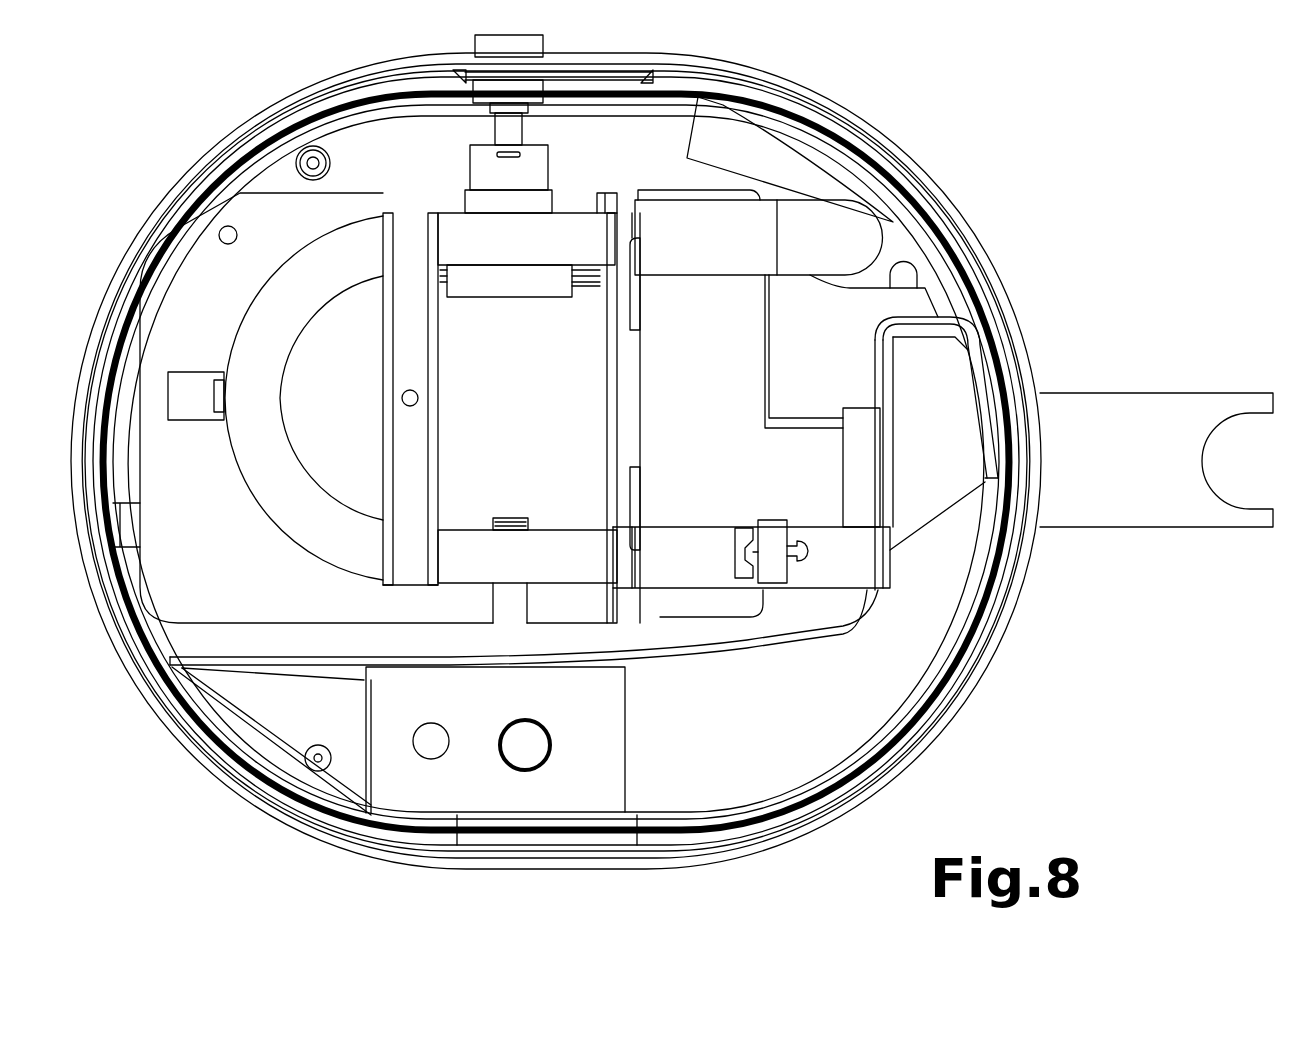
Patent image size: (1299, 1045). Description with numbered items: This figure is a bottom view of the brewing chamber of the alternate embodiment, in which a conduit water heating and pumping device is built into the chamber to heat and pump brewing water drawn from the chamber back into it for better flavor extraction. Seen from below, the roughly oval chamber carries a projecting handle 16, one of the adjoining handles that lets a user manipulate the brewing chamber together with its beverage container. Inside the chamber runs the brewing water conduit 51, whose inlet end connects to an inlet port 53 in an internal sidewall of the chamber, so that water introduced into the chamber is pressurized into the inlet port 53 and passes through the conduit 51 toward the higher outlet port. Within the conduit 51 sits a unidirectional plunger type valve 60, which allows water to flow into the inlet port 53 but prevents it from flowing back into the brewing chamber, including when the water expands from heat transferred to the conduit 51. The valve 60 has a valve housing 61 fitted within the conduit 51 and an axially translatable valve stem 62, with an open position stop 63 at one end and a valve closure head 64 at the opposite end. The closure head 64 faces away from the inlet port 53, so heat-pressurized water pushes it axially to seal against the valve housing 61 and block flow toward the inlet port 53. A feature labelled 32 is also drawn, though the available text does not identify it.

The handle 16 is at (1095, 420).
The brewing water conduit 51 is at (240, 473).
The opening 32 is at (527, 748).
The unidirectional plunger type valve 60 is at (775, 597).
The valve housing 61 is at (770, 533).
The valve stem 62 is at (796, 533).
The open position stop 63 is at (808, 553).
The valve closure head 64 is at (733, 538).
The inlet port 53 is at (888, 550).